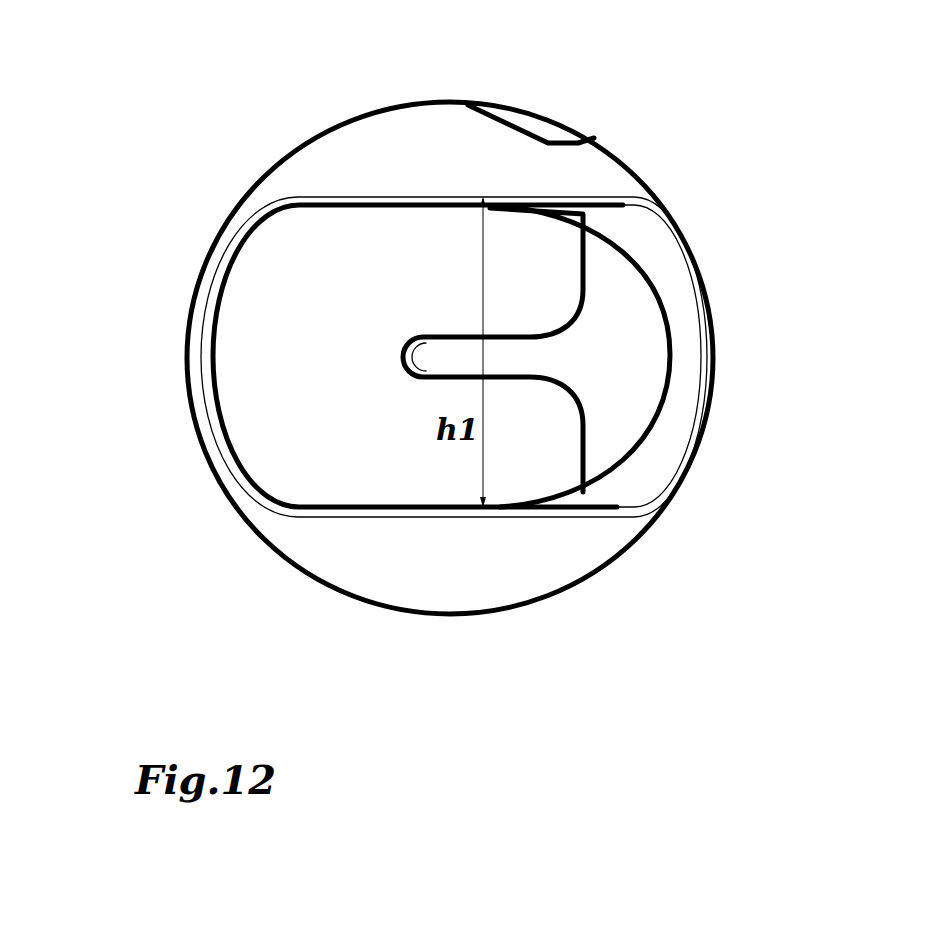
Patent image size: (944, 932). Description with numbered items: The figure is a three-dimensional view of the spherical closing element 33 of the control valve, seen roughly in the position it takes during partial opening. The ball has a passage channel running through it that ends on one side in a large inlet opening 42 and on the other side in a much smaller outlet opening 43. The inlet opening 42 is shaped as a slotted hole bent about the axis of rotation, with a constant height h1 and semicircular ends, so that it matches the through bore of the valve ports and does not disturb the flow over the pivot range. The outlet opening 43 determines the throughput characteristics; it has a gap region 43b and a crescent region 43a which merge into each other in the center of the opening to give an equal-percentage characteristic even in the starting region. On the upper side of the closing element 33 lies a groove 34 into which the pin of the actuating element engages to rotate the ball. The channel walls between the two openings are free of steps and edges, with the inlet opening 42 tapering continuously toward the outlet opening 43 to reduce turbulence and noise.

The closing element 33 is at (712, 141).
The groove 34 is at (547, 132).
The inlet opening 42 is at (245, 243).
The outlet opening 43 is at (667, 308).
The crescent region 43a is at (632, 415).
The gap region 43b is at (452, 353).